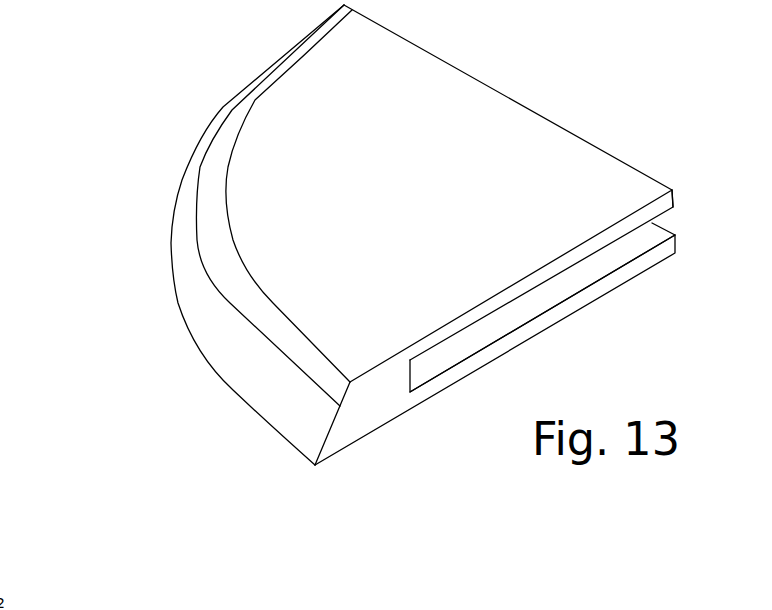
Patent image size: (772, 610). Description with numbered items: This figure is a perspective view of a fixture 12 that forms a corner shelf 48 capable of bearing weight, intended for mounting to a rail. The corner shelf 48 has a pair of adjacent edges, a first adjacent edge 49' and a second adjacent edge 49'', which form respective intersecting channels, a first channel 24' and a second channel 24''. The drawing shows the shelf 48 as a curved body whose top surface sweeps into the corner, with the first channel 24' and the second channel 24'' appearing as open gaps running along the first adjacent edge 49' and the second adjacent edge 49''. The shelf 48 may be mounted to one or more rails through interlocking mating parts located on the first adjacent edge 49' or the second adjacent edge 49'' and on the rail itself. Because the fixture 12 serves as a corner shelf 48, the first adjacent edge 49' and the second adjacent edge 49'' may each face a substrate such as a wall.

The fixture 12 is at (424, 235).
The corner shelf 48 is at (505, 120).
The channel 24'' is at (587, 224).
The adjacent edge 49'' is at (713, 148).
The channel 24' is at (495, 344).
The adjacent edge 49' is at (542, 317).